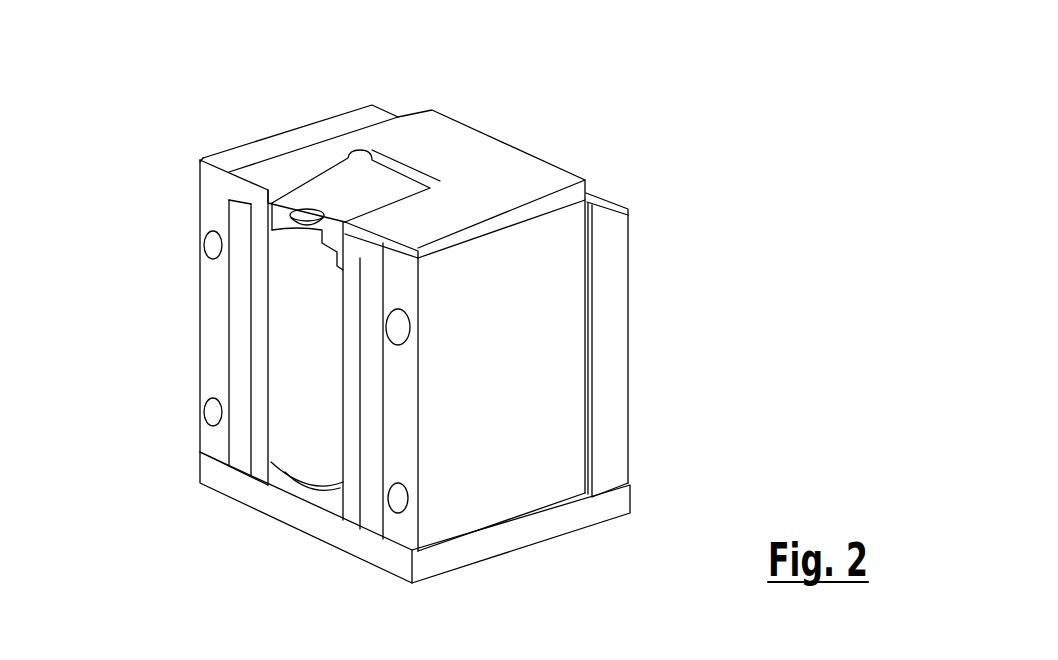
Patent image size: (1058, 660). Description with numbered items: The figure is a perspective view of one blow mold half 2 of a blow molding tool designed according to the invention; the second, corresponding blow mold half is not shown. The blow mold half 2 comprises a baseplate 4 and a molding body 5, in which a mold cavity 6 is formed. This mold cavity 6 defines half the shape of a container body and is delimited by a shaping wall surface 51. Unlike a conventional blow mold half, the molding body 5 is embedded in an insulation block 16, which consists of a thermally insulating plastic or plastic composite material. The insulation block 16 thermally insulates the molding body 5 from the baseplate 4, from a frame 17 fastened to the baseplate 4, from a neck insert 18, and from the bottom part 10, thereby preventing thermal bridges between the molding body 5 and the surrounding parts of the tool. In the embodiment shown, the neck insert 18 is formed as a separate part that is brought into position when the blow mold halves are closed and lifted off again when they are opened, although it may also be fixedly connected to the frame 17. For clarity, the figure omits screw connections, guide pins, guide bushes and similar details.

The blow mold half 2 is at (716, 136).
The baseplate 4 is at (618, 327).
The molding body 5 is at (262, 310).
The mold cavity 6 is at (309, 314).
The bottom part 10 is at (367, 548).
The insulation block 16 is at (238, 424).
The frame 17 is at (207, 193).
The neck insert 18 is at (248, 197).
The shaping wall surface 51 is at (297, 410).